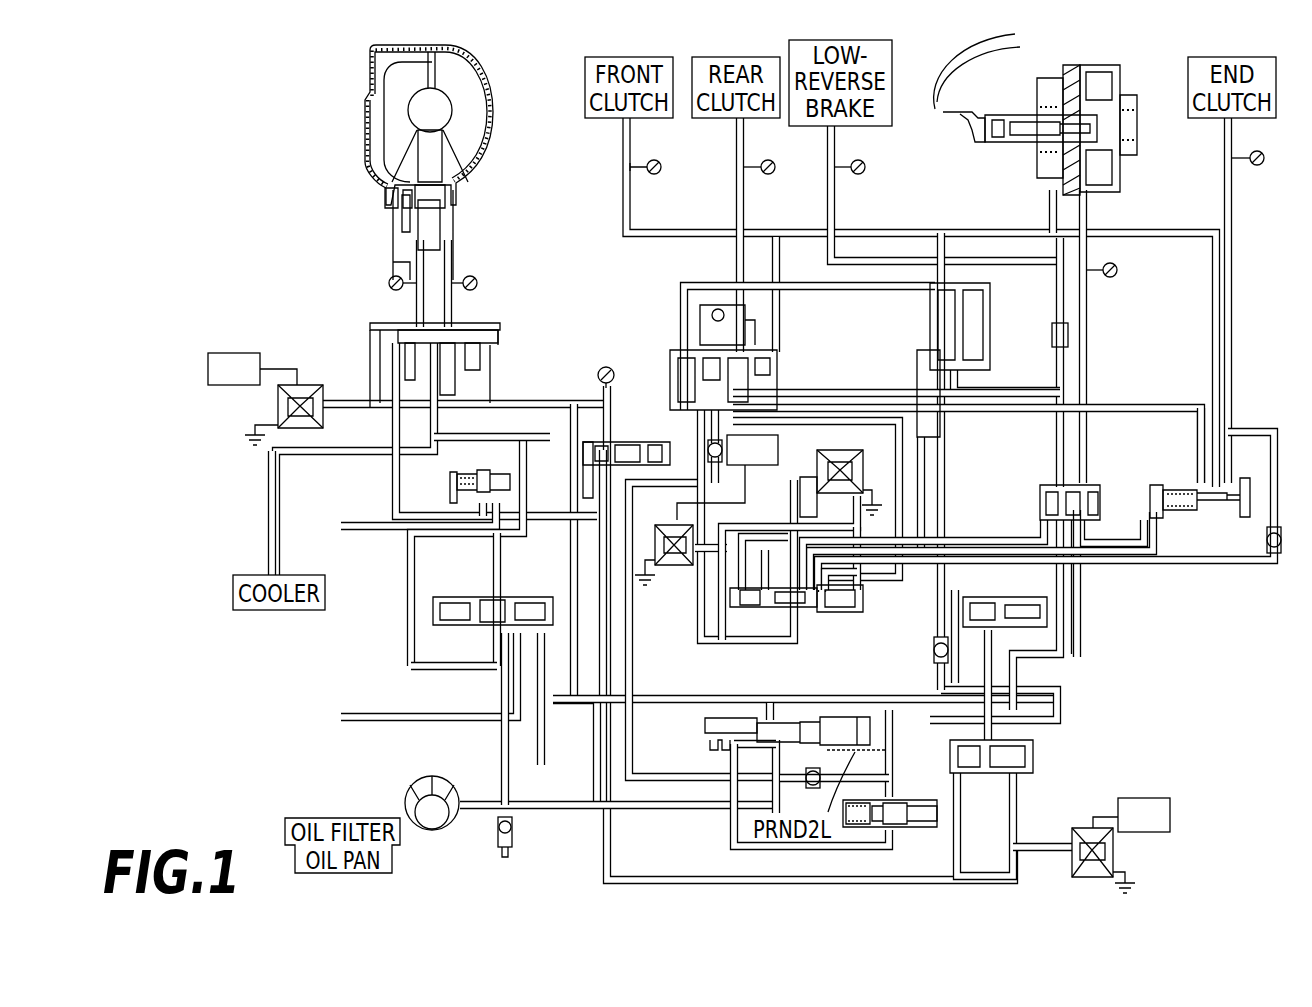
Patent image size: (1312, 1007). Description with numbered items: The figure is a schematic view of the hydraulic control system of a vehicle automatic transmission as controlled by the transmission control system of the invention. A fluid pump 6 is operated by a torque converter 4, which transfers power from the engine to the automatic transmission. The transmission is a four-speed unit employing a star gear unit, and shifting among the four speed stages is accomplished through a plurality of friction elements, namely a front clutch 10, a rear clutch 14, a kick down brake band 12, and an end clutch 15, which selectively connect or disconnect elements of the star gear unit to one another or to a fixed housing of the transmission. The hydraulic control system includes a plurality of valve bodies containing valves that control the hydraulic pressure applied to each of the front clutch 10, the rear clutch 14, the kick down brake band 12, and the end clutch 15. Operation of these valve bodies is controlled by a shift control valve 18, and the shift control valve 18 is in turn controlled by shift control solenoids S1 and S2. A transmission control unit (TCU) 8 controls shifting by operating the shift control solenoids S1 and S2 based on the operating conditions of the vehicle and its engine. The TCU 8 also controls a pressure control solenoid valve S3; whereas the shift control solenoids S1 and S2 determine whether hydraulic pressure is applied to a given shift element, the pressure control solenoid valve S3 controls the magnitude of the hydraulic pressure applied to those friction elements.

The torque converter 4 is at (378, 190).
The fluid pump 6 is at (450, 826).
The transmission control unit (TCU) 8 is at (240, 353).
The front clutch 10 is at (610, 118).
The kick down brake band 12 is at (968, 152).
The rear clutch 14 is at (712, 118).
The end clutch 15 is at (1215, 118).
The shift control valve 18 is at (843, 616).
The shift control solenoid S1 is at (818, 460).
The shift control solenoid S2 is at (676, 565).
The pressure control solenoid valve S3 is at (1088, 828).